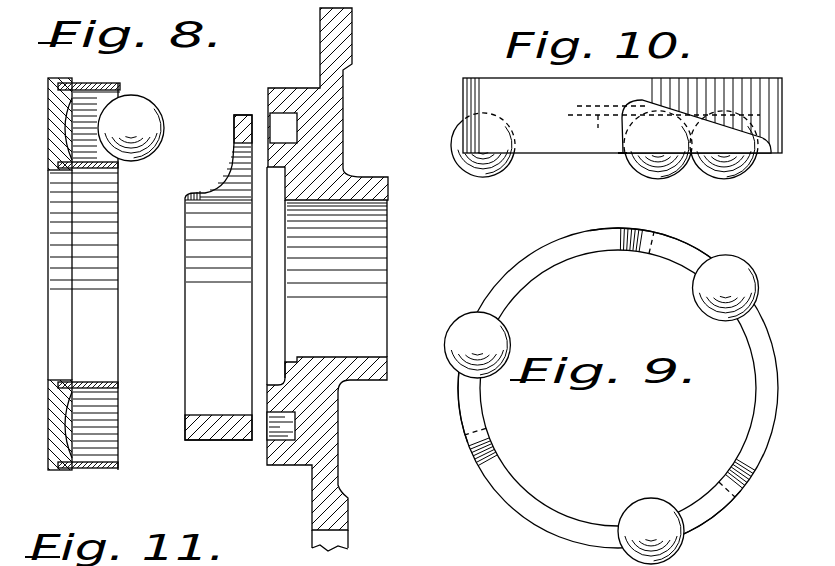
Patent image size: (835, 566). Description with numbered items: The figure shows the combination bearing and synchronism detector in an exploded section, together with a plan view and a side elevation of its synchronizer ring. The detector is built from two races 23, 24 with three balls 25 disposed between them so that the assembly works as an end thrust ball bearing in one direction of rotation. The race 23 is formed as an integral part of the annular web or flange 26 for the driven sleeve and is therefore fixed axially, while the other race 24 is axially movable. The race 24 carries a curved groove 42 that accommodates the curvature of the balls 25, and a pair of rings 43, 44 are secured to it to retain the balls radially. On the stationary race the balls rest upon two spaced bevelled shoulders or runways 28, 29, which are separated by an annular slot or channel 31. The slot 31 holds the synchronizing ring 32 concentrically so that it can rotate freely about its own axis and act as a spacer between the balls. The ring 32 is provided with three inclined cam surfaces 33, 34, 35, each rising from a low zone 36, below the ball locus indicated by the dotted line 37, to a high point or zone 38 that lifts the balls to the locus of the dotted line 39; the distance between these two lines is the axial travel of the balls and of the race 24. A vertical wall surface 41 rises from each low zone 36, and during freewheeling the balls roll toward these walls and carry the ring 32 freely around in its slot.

In FIG. 8, the race 23 is at (295, 448).
In FIG. 8, the race 24 is at (70, 352).
In FIG. 8, the balls 25 is at (147, 162).
In FIG. 10, the balls 25 is at (477, 178).
In FIG. 9, the balls 25 is at (696, 308).
In FIG. 8, the annular web or flange 26 is at (335, 130).
In FIG. 8, the shoulder or runway 28 is at (268, 115).
In FIG. 8, the shoulder or runway 29 is at (283, 128).
In FIG. 8, the slot or channel 31 is at (264, 437).
In FIG. 8, the synchronizing ring 32 is at (192, 312).
In FIG. 10, the synchronizing ring 32 is at (572, 154).
In FIG. 9, the synchronizing ring 32 is at (500, 500).
In FIG. 9, the inclined cam surface 33 is at (678, 249).
In FIG. 9, the inclined cam surface 34 is at (712, 507).
In FIG. 9, the inclined cam surface 35 is at (472, 410).
In FIG. 10, the low zone 36 is at (652, 100).
In FIG. 10, the dotted line 37 is at (577, 106).
In FIG. 10, the high point or zone 38 is at (766, 153).
In FIG. 10, the dotted line 39 is at (664, 131).
In FIG. 10, the vertical wall surface 41 is at (620, 151).
In FIG. 9, the vertical wall surface 41 is at (620, 243).
In FIG. 8, the curved groove 42 is at (68, 424).
In FIG. 8, the ring 43 is at (95, 172).
In FIG. 8, the ring 44 is at (121, 87).